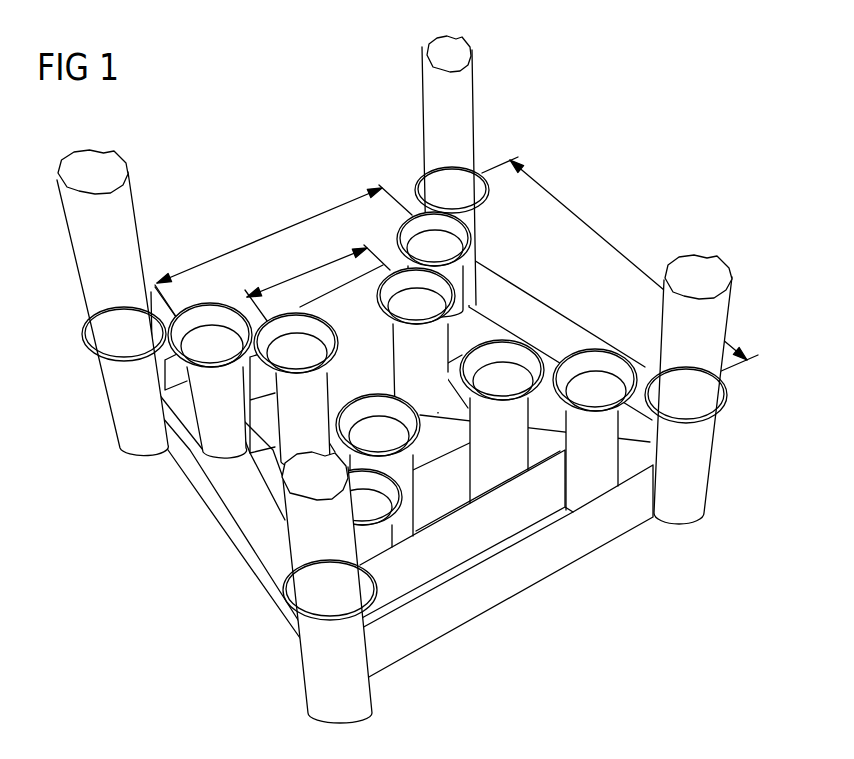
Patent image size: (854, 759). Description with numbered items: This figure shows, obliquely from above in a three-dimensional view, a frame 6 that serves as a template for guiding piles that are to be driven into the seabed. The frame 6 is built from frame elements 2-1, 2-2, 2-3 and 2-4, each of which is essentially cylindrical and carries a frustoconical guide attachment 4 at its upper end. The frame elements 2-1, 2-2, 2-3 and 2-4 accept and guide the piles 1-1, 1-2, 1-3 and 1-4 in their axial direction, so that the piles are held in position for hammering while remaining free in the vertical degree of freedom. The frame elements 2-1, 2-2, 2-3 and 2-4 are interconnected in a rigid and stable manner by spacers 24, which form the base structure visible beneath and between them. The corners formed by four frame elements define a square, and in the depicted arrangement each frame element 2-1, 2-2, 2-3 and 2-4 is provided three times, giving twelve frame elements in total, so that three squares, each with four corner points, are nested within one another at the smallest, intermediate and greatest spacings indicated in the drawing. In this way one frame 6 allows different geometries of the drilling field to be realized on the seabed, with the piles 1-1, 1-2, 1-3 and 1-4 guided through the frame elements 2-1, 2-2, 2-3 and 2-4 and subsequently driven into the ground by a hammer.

The frame 6 is at (222, 169).
The pile 1-1 is at (707, 308).
The pile 1-2 is at (318, 520).
The pile 1-3 is at (95, 257).
The pile 1-4 is at (460, 123).
The frame element 2-1 is at (697, 467).
The frame element 2-2 is at (325, 688).
The frame element 2-3 is at (127, 420).
The frame element 2-4 is at (470, 217).
The frustoconical guide attachment 4 is at (654, 377).
The spacer 24 is at (532, 565).